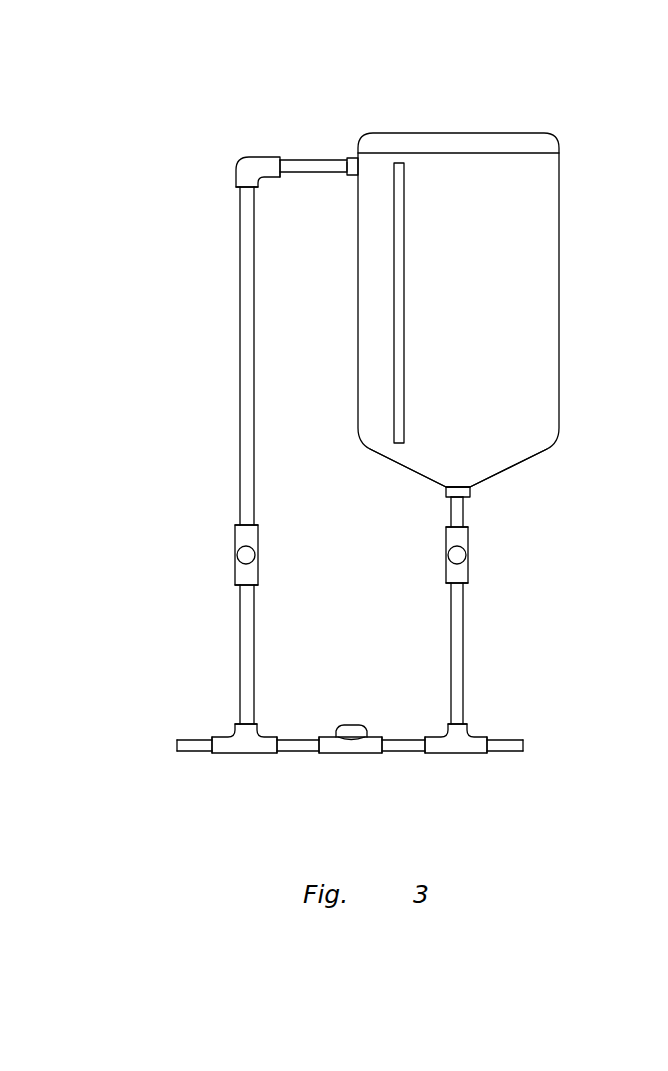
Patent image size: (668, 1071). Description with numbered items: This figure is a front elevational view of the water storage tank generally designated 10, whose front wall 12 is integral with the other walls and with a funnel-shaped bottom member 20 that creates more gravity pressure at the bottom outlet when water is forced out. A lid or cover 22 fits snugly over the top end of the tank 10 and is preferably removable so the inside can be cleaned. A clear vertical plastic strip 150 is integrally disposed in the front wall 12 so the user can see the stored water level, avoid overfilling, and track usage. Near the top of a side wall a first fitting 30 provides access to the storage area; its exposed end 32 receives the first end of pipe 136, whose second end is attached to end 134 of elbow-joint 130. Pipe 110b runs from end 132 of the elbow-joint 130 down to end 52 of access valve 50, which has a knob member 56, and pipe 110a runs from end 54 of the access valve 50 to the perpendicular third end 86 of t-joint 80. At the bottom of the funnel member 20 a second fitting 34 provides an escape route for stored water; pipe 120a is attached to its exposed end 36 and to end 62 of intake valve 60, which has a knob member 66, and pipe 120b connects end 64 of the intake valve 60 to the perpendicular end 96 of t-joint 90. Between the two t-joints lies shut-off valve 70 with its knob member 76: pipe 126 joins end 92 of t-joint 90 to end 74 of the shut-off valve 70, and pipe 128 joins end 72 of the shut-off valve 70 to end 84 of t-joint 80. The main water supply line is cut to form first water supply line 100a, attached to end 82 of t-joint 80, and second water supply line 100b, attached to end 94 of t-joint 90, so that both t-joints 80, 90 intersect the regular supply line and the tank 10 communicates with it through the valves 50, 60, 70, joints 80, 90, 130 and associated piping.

The storage tank 10 is at (590, 343).
The front wall 12 is at (550, 298).
The funnel-shaped bottom member 20 is at (500, 467).
The lid or cover 22 is at (505, 141).
The first fitting 30 is at (353, 157).
The exposed end of first fitting 32 is at (350, 158).
The second fitting 34 is at (470, 495).
The exposed end of second fitting 36 is at (447, 497).
The access valve 50 is at (213, 522).
The first open end of access valve 52 is at (255, 525).
The second open end of access valve 54 is at (257, 585).
The knob member of access valve 56 is at (238, 556).
The intake valve 60 is at (493, 546).
The first open end of intake valve 62 is at (467, 526).
The second open end of intake valve 64 is at (465, 585).
The knob member of intake valve 66 is at (450, 557).
The shut-off valve 70 is at (338, 769).
The first open end of shut-off valve 72 is at (323, 753).
The second open end of shut-off valve 74 is at (383, 737).
The knob member of shut-off valve 76 is at (353, 725).
The t-joint 80 is at (233, 769).
The first open end of t-joint 80 82 is at (213, 753).
The second open end of t-joint 80 84 is at (278, 737).
The third open end of t-joint 80 86 is at (255, 725).
The t-joint 90 is at (477, 775).
The first open end of t-joint 90 92 is at (425, 753).
The second open end of t-joint 90 94 is at (488, 737).
The third open end of t-joint 90 96 is at (466, 725).
The first water supply line 100a is at (185, 740).
The second water supply line 100b is at (508, 752).
The pipe 110a is at (245, 647).
The pipe 110b is at (247, 333).
The pipe 120a is at (452, 514).
The pipe 120b is at (457, 647).
The pipe 126 is at (395, 753).
The pipe 128 is at (295, 753).
The elbow-joint 130 is at (210, 156).
The first open end of elbow-joint 132 is at (240, 188).
The second open end of elbow-joint 134 is at (282, 177).
The pipe 136 is at (318, 160).
The clear vertical plastic strip 150 is at (404, 262).